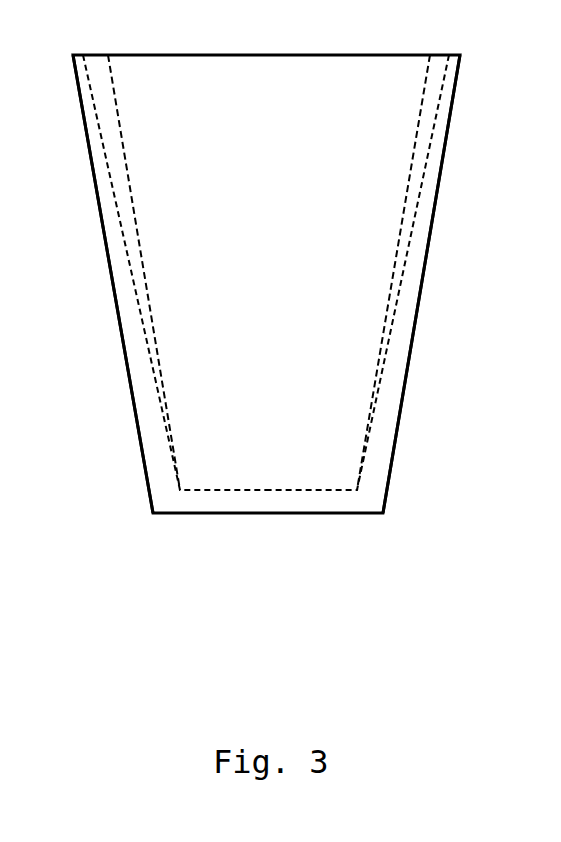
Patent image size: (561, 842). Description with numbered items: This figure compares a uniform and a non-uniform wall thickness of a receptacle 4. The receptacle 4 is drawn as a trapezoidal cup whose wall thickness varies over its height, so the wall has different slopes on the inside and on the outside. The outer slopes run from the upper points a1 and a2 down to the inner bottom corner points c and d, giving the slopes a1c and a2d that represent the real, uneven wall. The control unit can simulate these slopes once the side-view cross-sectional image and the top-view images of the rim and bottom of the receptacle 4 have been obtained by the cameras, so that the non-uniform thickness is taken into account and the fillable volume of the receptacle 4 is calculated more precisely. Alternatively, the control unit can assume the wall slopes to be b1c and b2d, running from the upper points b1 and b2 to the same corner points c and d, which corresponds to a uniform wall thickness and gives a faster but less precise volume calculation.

The receptacle 4 is at (220, 63).
The outer wall point a1 is at (100, 263).
The outer wall point a2 is at (428, 263).
The uniform-thickness wall point b1 is at (141, 252).
The uniform-thickness wall point b2 is at (393, 252).
The inner bottom corner point c is at (176, 272).
The inner bottom corner point d is at (359, 272).